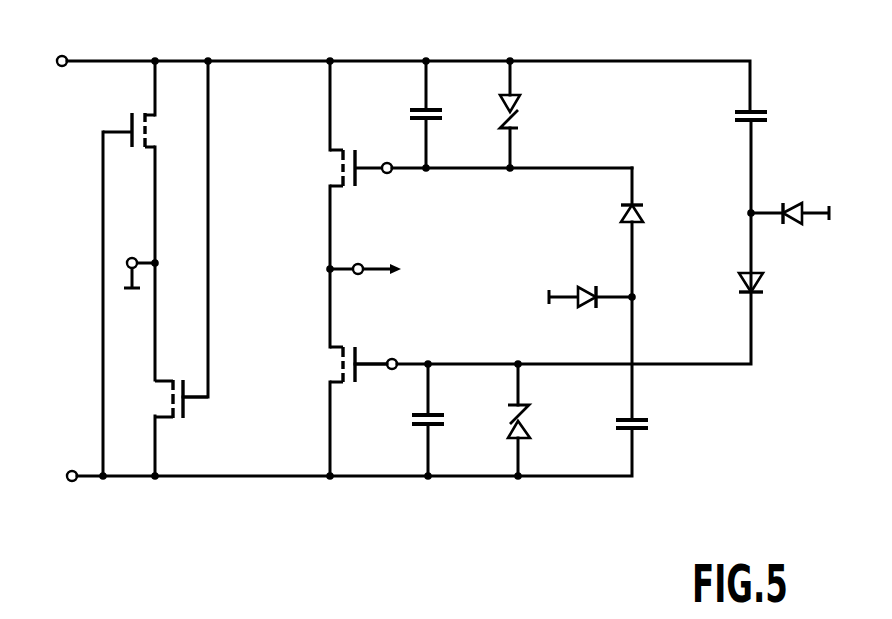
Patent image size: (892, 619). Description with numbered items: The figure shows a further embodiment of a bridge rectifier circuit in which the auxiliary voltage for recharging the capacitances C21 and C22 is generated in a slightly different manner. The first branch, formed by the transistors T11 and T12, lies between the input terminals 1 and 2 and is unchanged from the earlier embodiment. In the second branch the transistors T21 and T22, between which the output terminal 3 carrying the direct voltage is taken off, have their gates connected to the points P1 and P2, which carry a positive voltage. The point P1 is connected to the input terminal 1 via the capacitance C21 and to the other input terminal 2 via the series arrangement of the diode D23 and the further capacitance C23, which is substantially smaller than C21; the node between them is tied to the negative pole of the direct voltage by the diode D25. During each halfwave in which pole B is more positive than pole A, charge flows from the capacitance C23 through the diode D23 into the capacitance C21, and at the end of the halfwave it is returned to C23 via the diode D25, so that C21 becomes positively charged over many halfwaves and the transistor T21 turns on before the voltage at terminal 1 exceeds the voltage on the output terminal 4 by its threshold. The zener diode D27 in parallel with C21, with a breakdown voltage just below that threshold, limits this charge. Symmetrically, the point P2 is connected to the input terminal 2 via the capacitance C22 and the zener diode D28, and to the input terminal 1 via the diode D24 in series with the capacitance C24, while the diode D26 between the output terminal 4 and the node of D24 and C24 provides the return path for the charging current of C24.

The input terminal 1 is at (66, 67).
The input terminal 2 is at (60, 459).
The output terminal 3 is at (358, 263).
The output terminal 4 is at (130, 257).
The transistor T11 is at (150, 131).
The transistor T12 is at (164, 398).
The transistor T21 is at (334, 167).
The transistor T22 is at (336, 363).
The point P1 is at (392, 172).
The point P2 is at (391, 358).
The capacitance C21 is at (410, 113).
The capacitance C22 is at (418, 420).
The capacitance C23 is at (647, 422).
The capacitance C24 is at (766, 118).
The diode D23 is at (618, 212).
The diode D24 is at (740, 285).
The diode D25 is at (588, 306).
The diode D26 is at (795, 198).
The zener diode D27 is at (519, 100).
The zener diode D28 is at (531, 424).